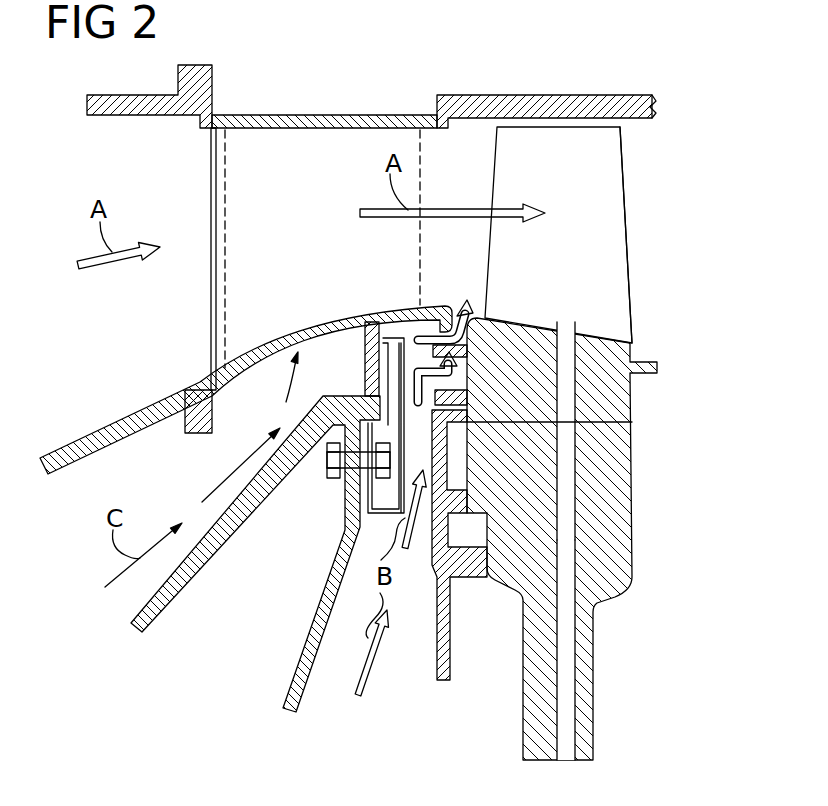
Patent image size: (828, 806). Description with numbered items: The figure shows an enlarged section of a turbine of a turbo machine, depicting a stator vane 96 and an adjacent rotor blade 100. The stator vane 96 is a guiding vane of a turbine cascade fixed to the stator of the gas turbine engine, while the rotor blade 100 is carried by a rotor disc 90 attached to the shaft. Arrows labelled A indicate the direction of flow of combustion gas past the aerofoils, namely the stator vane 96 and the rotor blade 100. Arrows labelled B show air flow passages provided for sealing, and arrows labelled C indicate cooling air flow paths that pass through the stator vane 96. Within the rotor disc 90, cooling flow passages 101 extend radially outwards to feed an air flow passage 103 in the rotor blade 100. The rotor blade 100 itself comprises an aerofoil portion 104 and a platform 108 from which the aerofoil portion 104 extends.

The stator vane 96 is at (237, 185).
The turbine blade 100 is at (612, 163).
The aerofoil portion 104 is at (622, 284).
The air flow passage 103 is at (567, 352).
The platform 108 is at (617, 400).
The rotor disc 90 is at (618, 466).
The cooling flow passages 101 is at (565, 513).